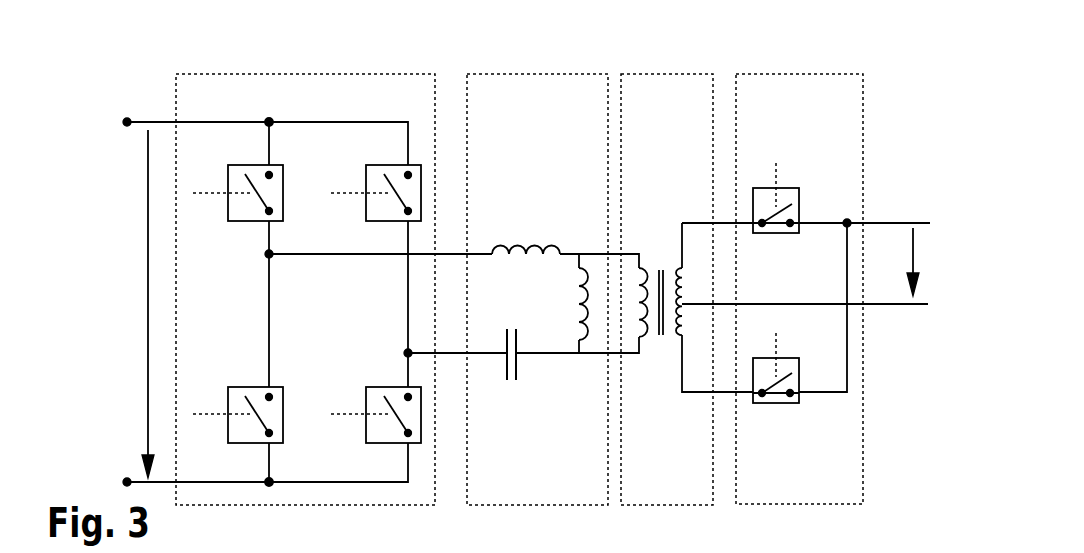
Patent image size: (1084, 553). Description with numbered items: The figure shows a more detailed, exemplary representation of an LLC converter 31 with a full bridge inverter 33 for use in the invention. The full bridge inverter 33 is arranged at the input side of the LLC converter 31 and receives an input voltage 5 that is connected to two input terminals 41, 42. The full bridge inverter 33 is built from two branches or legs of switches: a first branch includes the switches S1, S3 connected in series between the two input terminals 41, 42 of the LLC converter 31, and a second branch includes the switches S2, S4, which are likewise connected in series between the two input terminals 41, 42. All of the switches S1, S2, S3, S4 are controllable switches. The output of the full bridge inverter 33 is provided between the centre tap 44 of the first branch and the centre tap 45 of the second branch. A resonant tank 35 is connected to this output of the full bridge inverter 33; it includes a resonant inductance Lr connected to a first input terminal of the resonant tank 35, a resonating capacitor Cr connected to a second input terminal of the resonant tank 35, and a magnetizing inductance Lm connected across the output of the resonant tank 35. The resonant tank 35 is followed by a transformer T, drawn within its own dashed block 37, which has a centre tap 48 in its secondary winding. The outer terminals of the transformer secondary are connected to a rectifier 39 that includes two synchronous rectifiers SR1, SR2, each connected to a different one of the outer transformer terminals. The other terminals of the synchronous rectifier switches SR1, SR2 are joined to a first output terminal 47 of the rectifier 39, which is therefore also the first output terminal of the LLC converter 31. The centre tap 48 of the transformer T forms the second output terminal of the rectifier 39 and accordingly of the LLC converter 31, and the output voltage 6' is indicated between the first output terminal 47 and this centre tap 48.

The LLC converter 31 is at (160, 55).
The full bridge inverter 33 is at (305, 289).
The resonant tank 35 is at (537, 289).
The transformer stage 37 is at (667, 289).
The rectifier 39 is at (799, 289).
The input terminal 41 is at (123, 121).
The input terminal 42 is at (123, 481).
The centre tap of the first branch 44 is at (266, 255).
The centre tap of the second branch 45 is at (405, 350).
The first output terminal 47 is at (850, 220).
The centre tap 48 is at (686, 303).
The input voltage 5 is at (146, 257).
The output voltage 6' is at (934, 262).
The switch S1 is at (228, 165).
The switch S2 is at (367, 165).
The switch S3 is at (228, 387).
The switch S4 is at (367, 387).
The resonant inductance Lr is at (527, 241).
The magnetizing inductance Lm is at (576, 300).
The resonating capacitor Cr is at (518, 373).
The transformer T is at (655, 244).
The synchronous rectifier SR1 is at (782, 188).
The synchronous rectifier SR2 is at (782, 358).